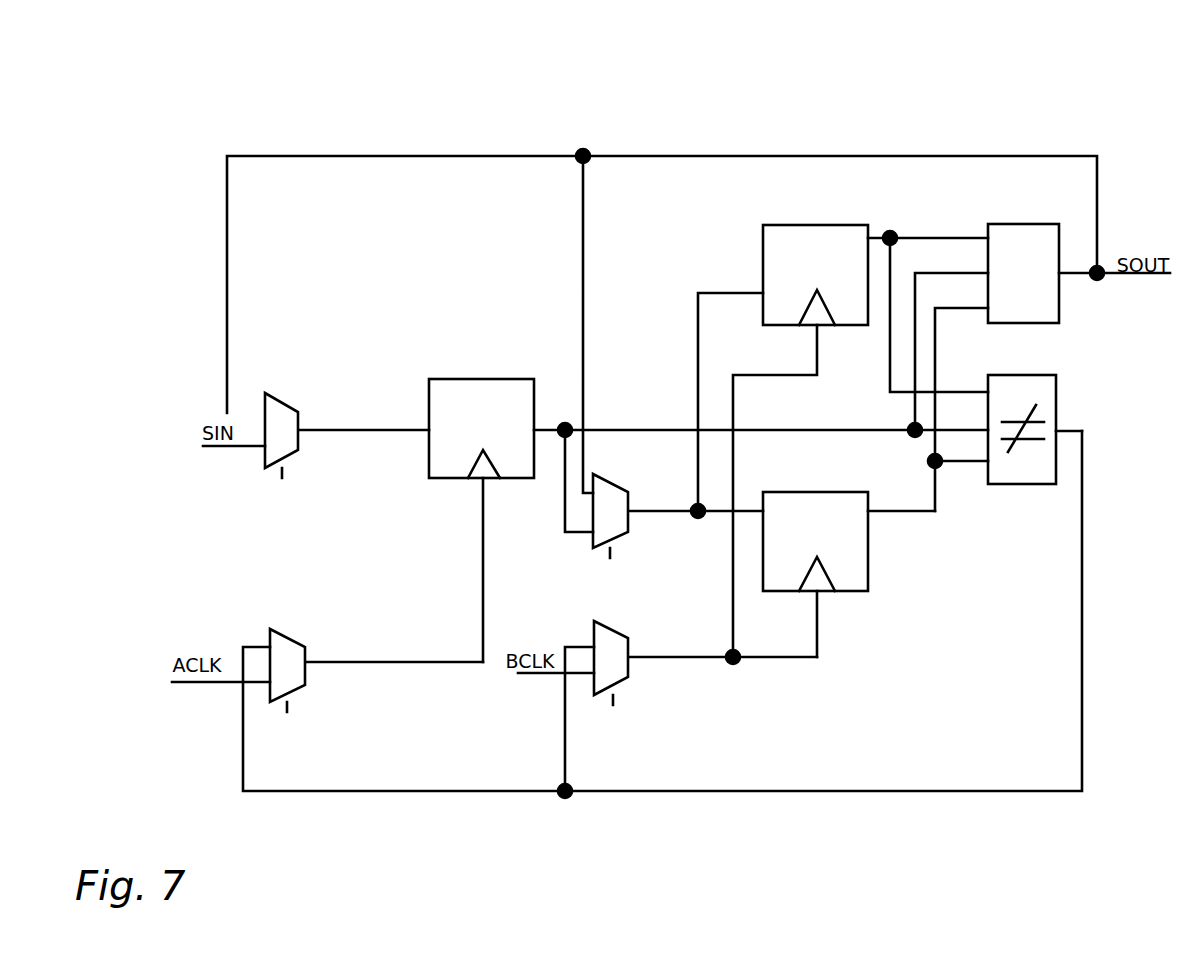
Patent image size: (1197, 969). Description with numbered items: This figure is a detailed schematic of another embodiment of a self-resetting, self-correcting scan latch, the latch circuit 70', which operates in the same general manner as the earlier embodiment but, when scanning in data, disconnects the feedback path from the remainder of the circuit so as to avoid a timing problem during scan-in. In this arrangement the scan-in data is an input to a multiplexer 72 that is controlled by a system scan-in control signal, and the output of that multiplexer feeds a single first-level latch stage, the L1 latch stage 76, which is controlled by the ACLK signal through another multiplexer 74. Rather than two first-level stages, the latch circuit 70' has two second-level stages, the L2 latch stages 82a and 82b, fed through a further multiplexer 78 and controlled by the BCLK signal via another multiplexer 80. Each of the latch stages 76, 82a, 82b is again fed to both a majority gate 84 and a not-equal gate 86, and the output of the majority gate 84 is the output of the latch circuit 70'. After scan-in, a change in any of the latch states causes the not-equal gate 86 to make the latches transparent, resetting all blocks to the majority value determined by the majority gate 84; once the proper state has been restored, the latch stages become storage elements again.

The latch circuit 70' is at (1019, 62).
The multiplexer 72 is at (300, 416).
The multiplexer 74 is at (307, 650).
The L1 latch stage 76 is at (510, 379).
The multiplexer 78 is at (630, 494).
The multiplexer 80 is at (632, 670).
The L2 latch stage 82a is at (763, 248).
The L2 latch stage 82b is at (858, 591).
The majority gate 84 is at (1062, 308).
The not-equal gate 86 is at (1030, 484).